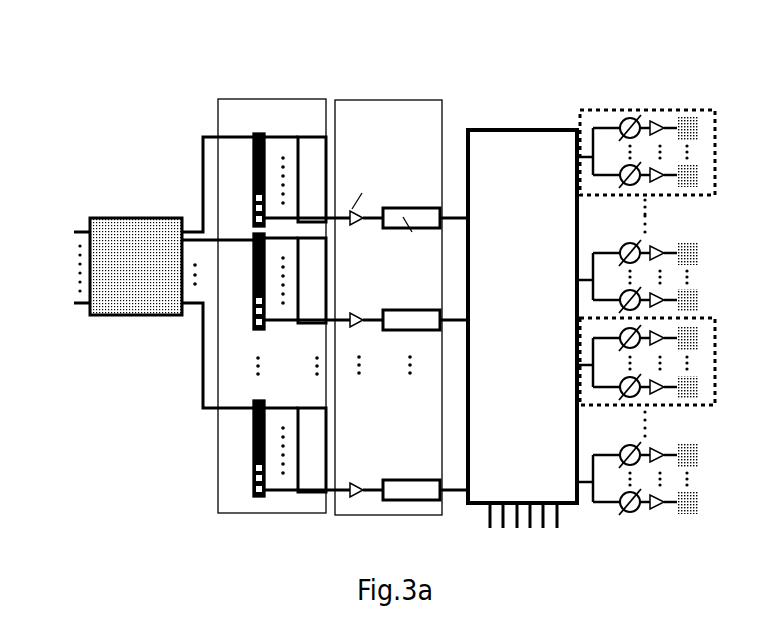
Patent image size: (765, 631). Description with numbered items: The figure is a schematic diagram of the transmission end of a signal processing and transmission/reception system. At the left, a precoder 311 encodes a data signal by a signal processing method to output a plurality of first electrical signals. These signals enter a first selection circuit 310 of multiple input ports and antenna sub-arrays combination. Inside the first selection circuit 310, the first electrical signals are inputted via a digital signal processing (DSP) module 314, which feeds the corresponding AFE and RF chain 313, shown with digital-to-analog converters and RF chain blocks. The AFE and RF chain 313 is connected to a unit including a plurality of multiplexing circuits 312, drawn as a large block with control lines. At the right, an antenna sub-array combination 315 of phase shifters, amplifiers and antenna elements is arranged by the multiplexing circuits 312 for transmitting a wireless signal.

The first selection circuit 310 is at (416, 42).
The precoder 311 is at (113, 235).
The multiplexing circuits 312 is at (533, 160).
The AFE and RF chain 313 is at (407, 148).
The digital signal processing (DSP) module 314 is at (278, 148).
The antenna sub-array combination 315 is at (650, 157).